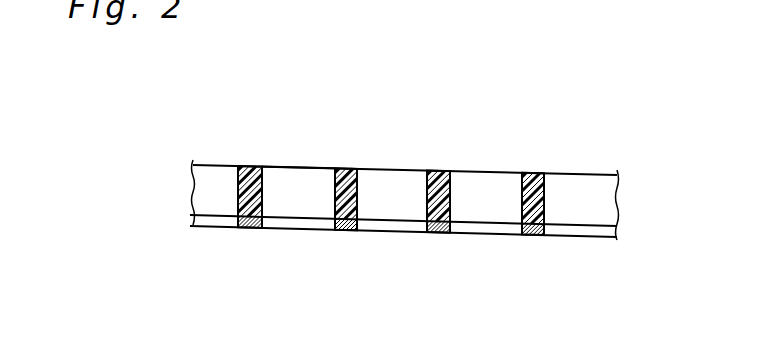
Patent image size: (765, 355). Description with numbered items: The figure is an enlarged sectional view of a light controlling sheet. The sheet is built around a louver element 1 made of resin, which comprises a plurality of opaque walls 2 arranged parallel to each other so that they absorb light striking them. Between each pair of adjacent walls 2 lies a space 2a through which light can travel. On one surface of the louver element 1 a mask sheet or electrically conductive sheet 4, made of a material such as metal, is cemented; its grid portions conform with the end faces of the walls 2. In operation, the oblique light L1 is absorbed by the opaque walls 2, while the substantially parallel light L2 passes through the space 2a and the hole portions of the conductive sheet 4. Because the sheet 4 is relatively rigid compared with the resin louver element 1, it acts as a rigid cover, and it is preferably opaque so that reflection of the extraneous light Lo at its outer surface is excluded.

The louver element 1 is at (222, 187).
The walls 2 is at (248, 170).
The space 2a is at (300, 168).
The electrically conductive sheet 4 is at (218, 221).
The oblique light L1 is at (422, 194).
The substantially parallel light L2 is at (392, 286).
The extraneous light Lo is at (438, 238).